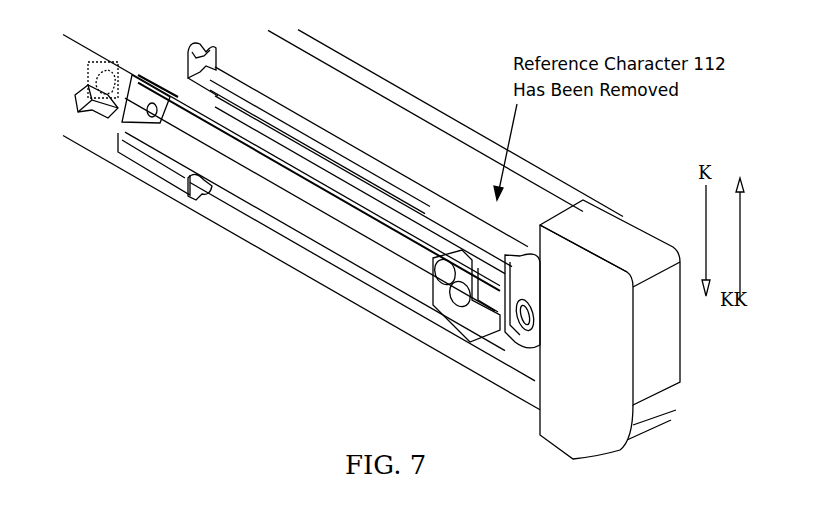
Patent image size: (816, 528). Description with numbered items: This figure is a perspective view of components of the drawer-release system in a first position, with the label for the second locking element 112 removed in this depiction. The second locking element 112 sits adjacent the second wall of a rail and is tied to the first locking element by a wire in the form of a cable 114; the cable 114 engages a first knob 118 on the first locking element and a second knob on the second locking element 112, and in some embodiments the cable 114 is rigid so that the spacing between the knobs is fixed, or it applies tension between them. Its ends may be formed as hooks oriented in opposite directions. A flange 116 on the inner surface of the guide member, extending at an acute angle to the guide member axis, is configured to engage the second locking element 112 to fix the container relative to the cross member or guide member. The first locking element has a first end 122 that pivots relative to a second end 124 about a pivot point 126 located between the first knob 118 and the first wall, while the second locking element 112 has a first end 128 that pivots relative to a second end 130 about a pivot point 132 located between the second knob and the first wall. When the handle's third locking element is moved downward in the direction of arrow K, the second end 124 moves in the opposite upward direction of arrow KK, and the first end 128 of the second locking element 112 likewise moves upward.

The second locking element 112 is at (136, 162).
The cable 114 is at (268, 152).
The flange 116 is at (86, 114).
The first knob 118 is at (450, 262).
The first end of first locking element 122 is at (522, 258).
The second end of first locking element 124 is at (442, 292).
The pivot point 126 is at (458, 302).
The first end of second locking element 128 is at (90, 72).
The second end of second locking element 130 is at (152, 80).
The pivot point 132 is at (200, 44).